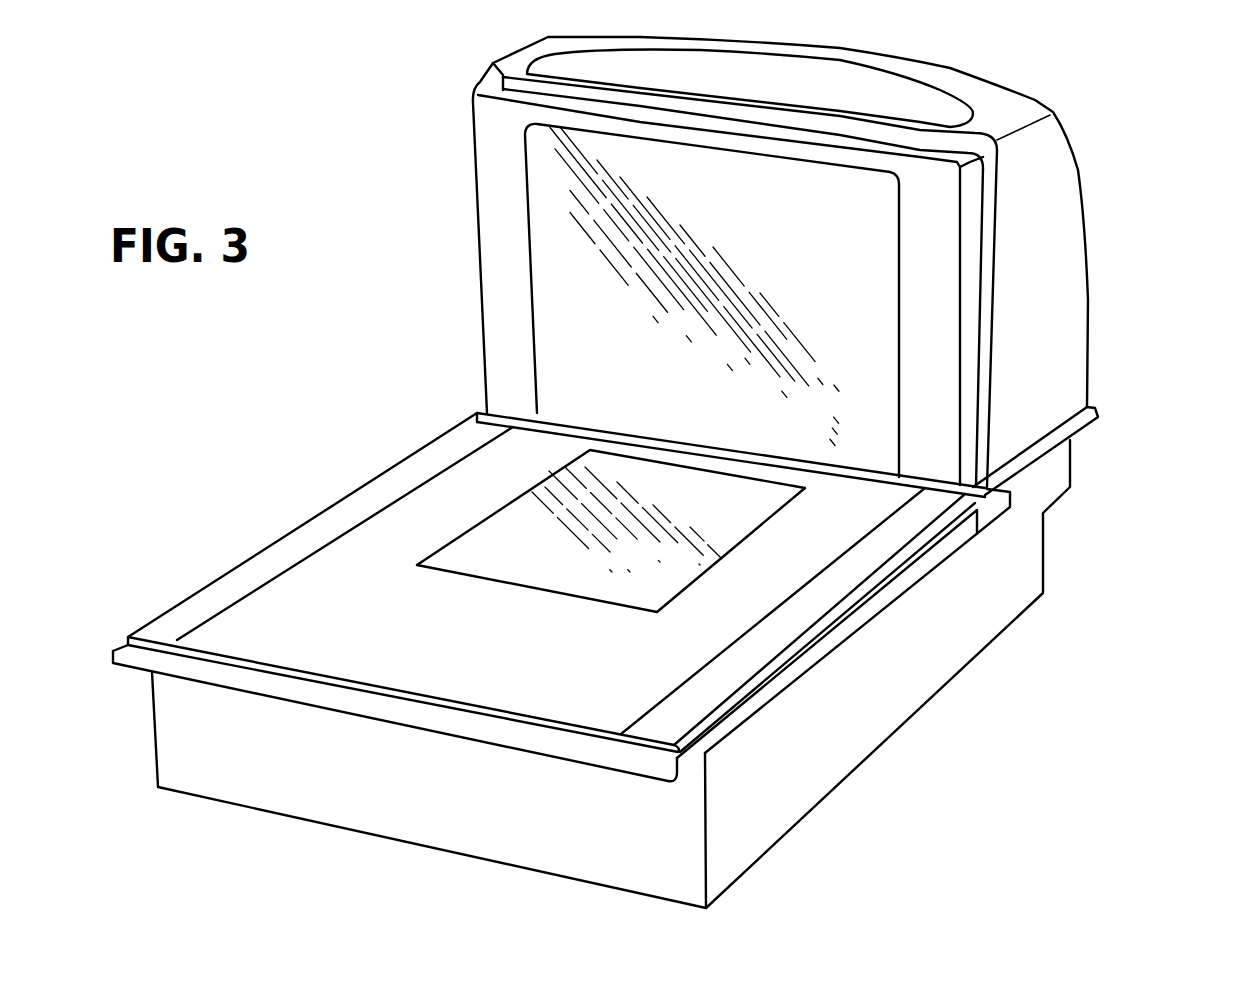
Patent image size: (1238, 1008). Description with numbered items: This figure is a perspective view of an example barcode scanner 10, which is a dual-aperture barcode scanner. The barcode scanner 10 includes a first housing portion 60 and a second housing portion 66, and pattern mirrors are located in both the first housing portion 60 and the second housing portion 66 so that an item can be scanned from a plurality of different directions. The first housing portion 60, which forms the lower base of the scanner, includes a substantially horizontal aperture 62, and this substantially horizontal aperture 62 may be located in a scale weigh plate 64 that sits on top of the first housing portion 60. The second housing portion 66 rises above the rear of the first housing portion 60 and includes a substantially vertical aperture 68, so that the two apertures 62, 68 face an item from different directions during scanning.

The barcode scanner 10 is at (1086, 171).
The first housing portion 60 is at (860, 710).
The substantially horizontal aperture 62 is at (487, 515).
The scale weigh plate 64 is at (268, 592).
The second housing portion 66 is at (950, 70).
The substantially vertical aperture 68 is at (550, 280).